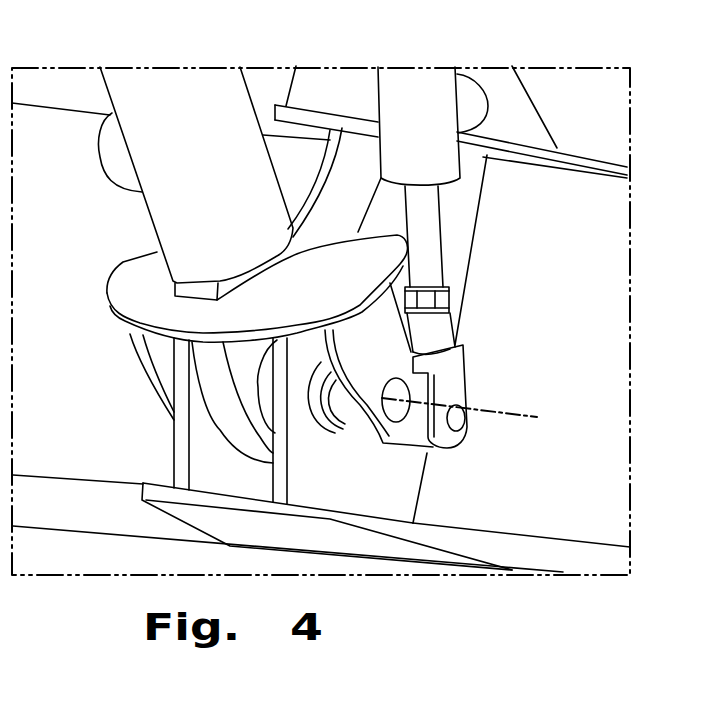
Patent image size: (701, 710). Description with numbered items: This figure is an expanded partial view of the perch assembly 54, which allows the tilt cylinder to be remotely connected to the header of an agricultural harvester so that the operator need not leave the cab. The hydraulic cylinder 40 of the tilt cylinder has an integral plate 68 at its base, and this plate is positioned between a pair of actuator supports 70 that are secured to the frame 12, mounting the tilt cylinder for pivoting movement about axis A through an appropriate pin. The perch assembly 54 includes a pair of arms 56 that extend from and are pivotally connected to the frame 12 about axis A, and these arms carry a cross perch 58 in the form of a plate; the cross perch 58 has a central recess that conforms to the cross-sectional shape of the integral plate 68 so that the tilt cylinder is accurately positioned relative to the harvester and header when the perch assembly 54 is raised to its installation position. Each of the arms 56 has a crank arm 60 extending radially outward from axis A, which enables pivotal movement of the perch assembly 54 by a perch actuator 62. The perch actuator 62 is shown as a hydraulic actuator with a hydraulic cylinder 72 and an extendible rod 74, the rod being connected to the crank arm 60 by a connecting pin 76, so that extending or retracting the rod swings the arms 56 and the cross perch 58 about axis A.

The frame 12 is at (573, 533).
The hydraulic cylinder 40 is at (150, 218).
The perch assembly 54 is at (475, 333).
The arms 56 is at (147, 358).
The cross perch 58 is at (282, 287).
The crank arm 60 is at (418, 433).
The perch actuator 62 is at (470, 92).
The integral plate 68 is at (220, 385).
The actuator supports 70 is at (180, 443).
The hydraulic cylinder 72 is at (377, 97).
The extendible rod 74 is at (449, 241).
The connecting pin 76 is at (462, 424).
The axis A is at (513, 412).